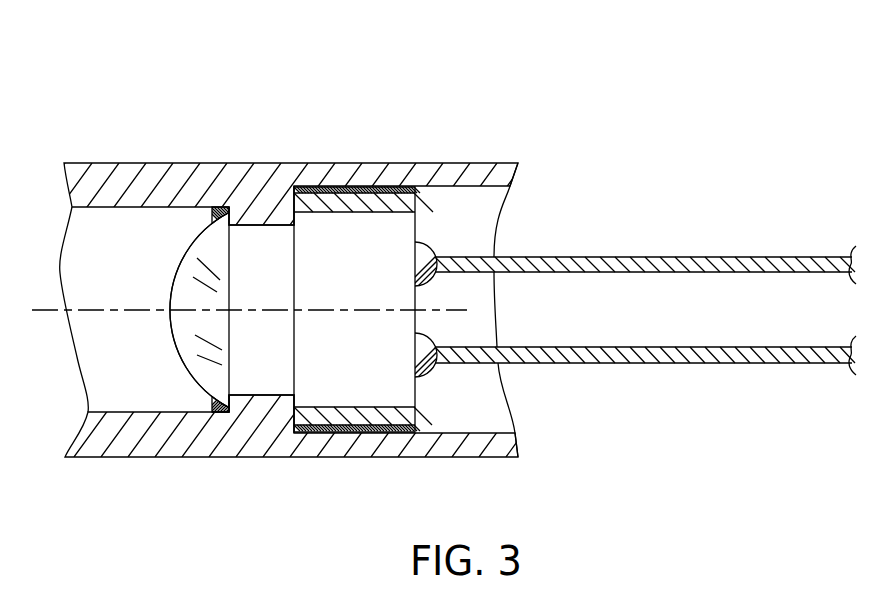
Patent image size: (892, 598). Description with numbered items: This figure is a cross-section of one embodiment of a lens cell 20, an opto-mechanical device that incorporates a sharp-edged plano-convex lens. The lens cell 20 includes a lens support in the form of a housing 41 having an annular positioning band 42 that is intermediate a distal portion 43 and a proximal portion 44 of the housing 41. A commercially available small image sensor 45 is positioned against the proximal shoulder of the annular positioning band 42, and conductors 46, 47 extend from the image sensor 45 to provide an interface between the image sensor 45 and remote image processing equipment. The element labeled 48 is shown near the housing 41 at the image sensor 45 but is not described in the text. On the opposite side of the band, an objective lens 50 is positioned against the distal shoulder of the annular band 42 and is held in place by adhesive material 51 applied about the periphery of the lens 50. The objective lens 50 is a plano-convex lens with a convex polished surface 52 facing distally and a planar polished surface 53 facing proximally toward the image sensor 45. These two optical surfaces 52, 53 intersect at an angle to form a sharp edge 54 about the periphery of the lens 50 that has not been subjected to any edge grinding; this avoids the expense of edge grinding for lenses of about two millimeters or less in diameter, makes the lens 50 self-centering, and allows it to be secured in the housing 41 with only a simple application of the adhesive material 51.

The lens cell 20 is at (489, 101).
The housing 41 is at (383, 163).
The annular positioning band 42 is at (263, 215).
The distal portion 43 is at (67, 221).
The proximal portion 44 is at (508, 203).
The image sensor 45 is at (363, 309).
The conductor 46 is at (683, 347).
The conductor 47 is at (683, 257).
The ferrule sleeve 48 is at (373, 433).
The objective lens 50 is at (185, 323).
The adhesive material 51 is at (222, 413).
The convex polished surface 52 is at (200, 263).
The planar polished surface 53 is at (230, 298).
The sharp edge 54 is at (222, 413).